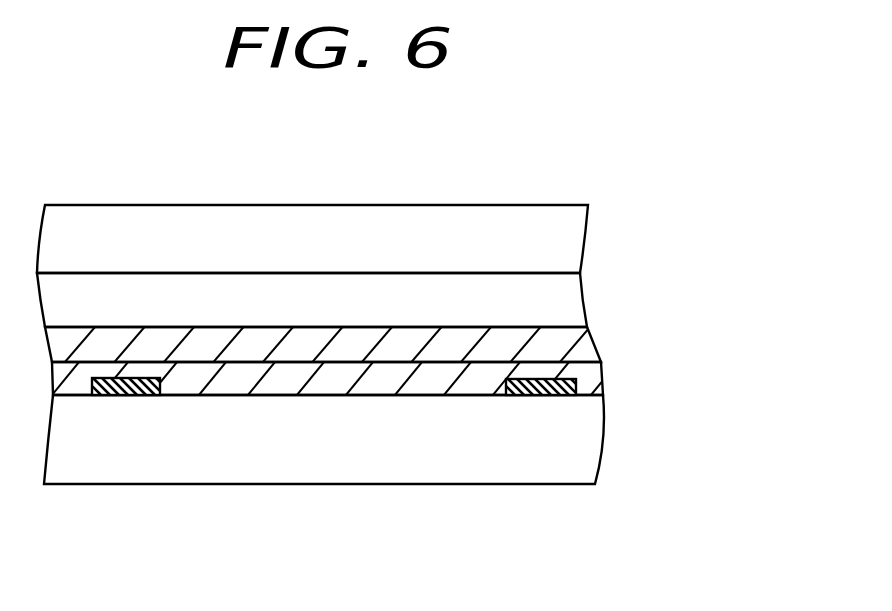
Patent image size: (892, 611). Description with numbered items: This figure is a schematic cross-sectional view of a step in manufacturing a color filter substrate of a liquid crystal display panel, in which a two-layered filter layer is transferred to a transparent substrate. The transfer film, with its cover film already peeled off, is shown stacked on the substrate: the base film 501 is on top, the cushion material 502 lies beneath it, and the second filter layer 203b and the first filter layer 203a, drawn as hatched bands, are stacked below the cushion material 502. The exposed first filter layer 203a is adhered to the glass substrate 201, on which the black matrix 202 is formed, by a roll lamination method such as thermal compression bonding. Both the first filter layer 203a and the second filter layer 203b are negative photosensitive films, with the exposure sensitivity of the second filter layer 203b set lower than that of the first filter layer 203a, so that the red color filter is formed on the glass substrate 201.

The base film 501 is at (196, 240).
The cushion material 502 is at (333, 297).
The second filter layer 203b is at (573, 350).
The first filter layer 203a is at (225, 382).
The glass substrate 201 is at (393, 460).
The black matrix 202 is at (112, 397).